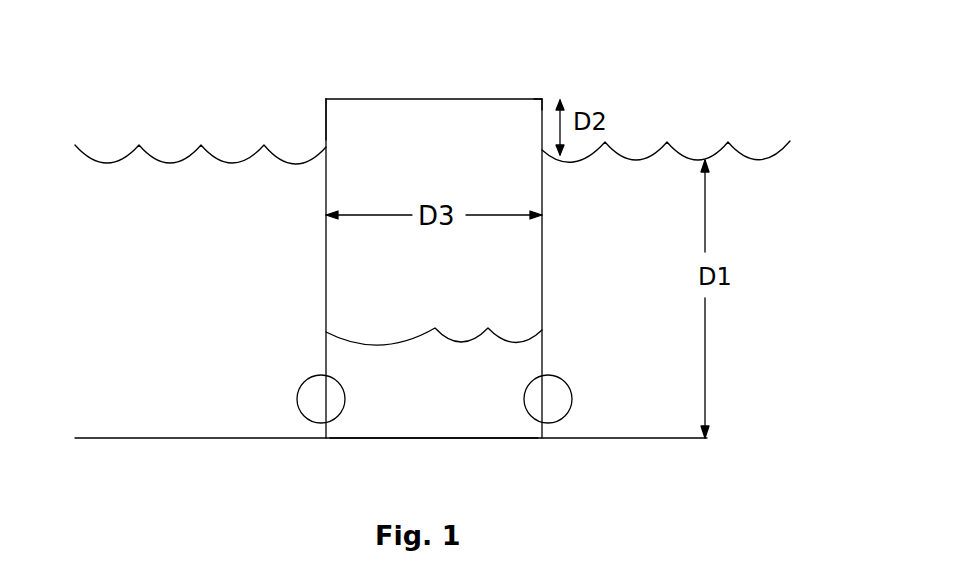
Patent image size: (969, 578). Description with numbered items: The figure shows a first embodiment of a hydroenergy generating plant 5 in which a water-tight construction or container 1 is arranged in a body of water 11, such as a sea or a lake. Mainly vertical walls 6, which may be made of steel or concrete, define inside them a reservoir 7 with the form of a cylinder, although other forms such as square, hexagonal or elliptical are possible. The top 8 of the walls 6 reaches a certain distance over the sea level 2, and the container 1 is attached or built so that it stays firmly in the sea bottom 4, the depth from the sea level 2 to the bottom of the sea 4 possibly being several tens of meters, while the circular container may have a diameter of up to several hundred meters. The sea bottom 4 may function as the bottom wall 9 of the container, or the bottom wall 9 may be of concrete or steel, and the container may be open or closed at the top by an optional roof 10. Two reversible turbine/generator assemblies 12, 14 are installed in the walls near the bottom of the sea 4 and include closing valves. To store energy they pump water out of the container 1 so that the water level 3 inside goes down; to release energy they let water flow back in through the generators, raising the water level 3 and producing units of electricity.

The water-tight container 1 is at (326, 99).
The sea level 2 is at (93, 160).
The water level in the container 3 is at (385, 329).
The sea bottom 4 is at (100, 437).
The hydroenergy generating plant 5 is at (644, 88).
The vertical walls 6 is at (326, 262).
The reservoir 7 is at (452, 163).
The top of the walls 8 is at (543, 103).
The bottom wall 9 is at (402, 437).
The roof 10 is at (470, 99).
The body of water 11 is at (156, 295).
The reversible turbine/generator assembly 12 is at (297, 394).
The reversible turbine/generator assembly 14 is at (573, 404).